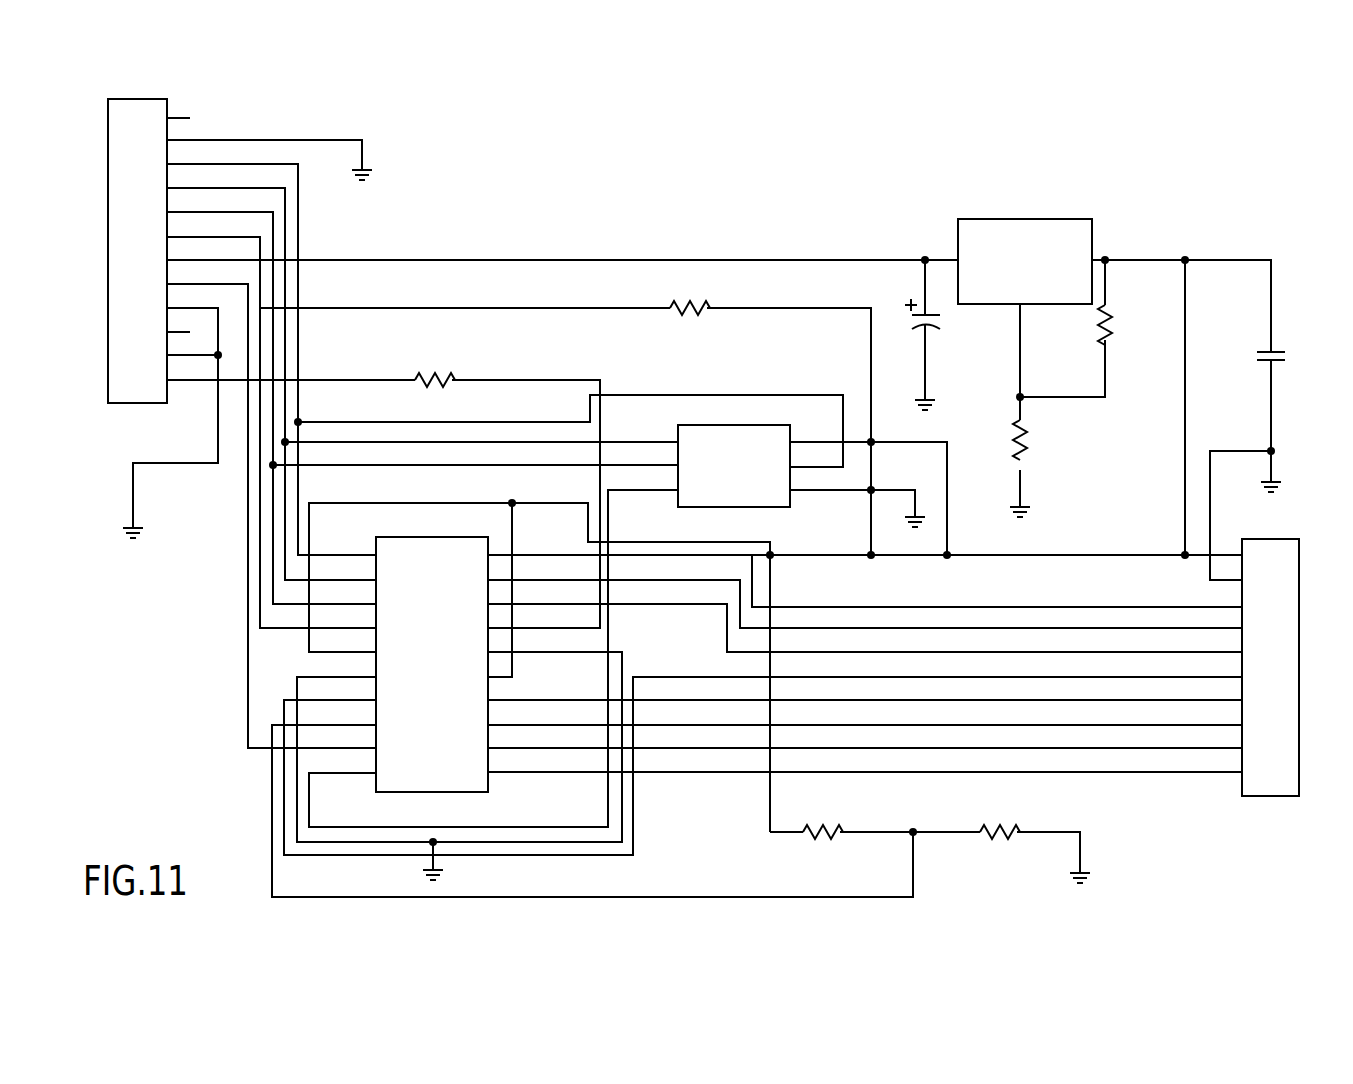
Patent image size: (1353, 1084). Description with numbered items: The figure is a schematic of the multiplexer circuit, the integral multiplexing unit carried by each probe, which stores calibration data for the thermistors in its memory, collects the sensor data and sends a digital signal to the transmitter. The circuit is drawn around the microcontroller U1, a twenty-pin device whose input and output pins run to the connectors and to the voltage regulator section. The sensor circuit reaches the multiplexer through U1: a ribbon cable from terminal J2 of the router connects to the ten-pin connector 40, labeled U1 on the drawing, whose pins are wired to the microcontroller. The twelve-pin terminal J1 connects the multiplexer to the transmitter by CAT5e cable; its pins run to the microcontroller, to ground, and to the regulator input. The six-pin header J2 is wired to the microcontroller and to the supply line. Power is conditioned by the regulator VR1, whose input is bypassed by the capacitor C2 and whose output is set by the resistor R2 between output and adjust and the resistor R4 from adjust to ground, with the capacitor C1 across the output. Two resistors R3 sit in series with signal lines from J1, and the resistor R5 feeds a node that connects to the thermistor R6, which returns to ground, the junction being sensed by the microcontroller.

The CPC-10T-ND connector 40 is at (1299, 646).
The terminal J1 is at (134, 253).
The terminal J2 is at (732, 468).
The element U1 is at (432, 668).
The LM317 voltage regulator VR1 is at (1025, 235).
The 240 ohm resistor R2 is at (1133, 318).
The resistor R3 is at (562, 346).
The 732 ohm resistor R4 is at (1050, 443).
The 10k ohm resistor R5 is at (824, 831).
The 10k ohm thermistor R6 is at (998, 844).
The 0.1 capacitor C1 is at (1287, 350).
The 10uF capacitor C2 is at (947, 347).